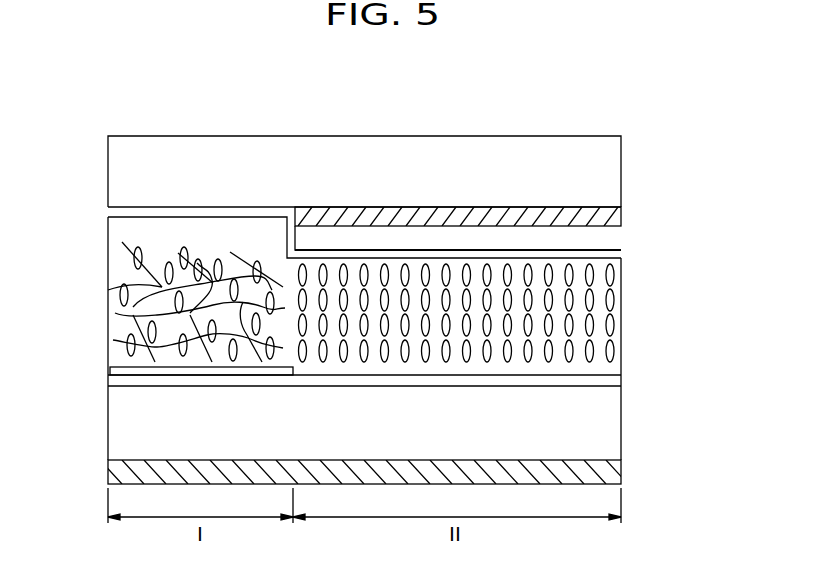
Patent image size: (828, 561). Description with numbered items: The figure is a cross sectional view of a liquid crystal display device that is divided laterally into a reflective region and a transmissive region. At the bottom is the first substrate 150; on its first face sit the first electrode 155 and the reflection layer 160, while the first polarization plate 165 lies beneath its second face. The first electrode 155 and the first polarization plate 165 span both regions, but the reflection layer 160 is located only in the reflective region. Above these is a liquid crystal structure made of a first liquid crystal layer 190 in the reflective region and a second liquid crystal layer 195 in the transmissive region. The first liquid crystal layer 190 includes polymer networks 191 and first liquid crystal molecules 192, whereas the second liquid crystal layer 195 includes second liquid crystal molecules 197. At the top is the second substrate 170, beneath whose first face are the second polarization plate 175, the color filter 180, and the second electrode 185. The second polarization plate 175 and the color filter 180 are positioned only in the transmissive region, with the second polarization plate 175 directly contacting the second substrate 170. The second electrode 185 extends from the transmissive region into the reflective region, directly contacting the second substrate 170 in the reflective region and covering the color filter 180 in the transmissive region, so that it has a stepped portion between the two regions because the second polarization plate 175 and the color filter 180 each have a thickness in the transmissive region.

The second substrate 170 is at (621, 165).
The second polarization plate 175 is at (615, 218).
The color filter 180 is at (615, 238).
The second electrode 185 is at (615, 255).
The second liquid crystal layer 195 is at (515, 316).
The second liquid crystal molecules 197 is at (612, 300).
The first liquid crystal layer 190 is at (145, 292).
The polymer networks 191 is at (45, 257).
The first liquid crystal molecules 192 is at (108, 290).
The reflection layer 160 is at (108, 370).
The first electrode 155 is at (621, 382).
The first substrate 150 is at (615, 425).
The first polarization plate 165 is at (615, 473).